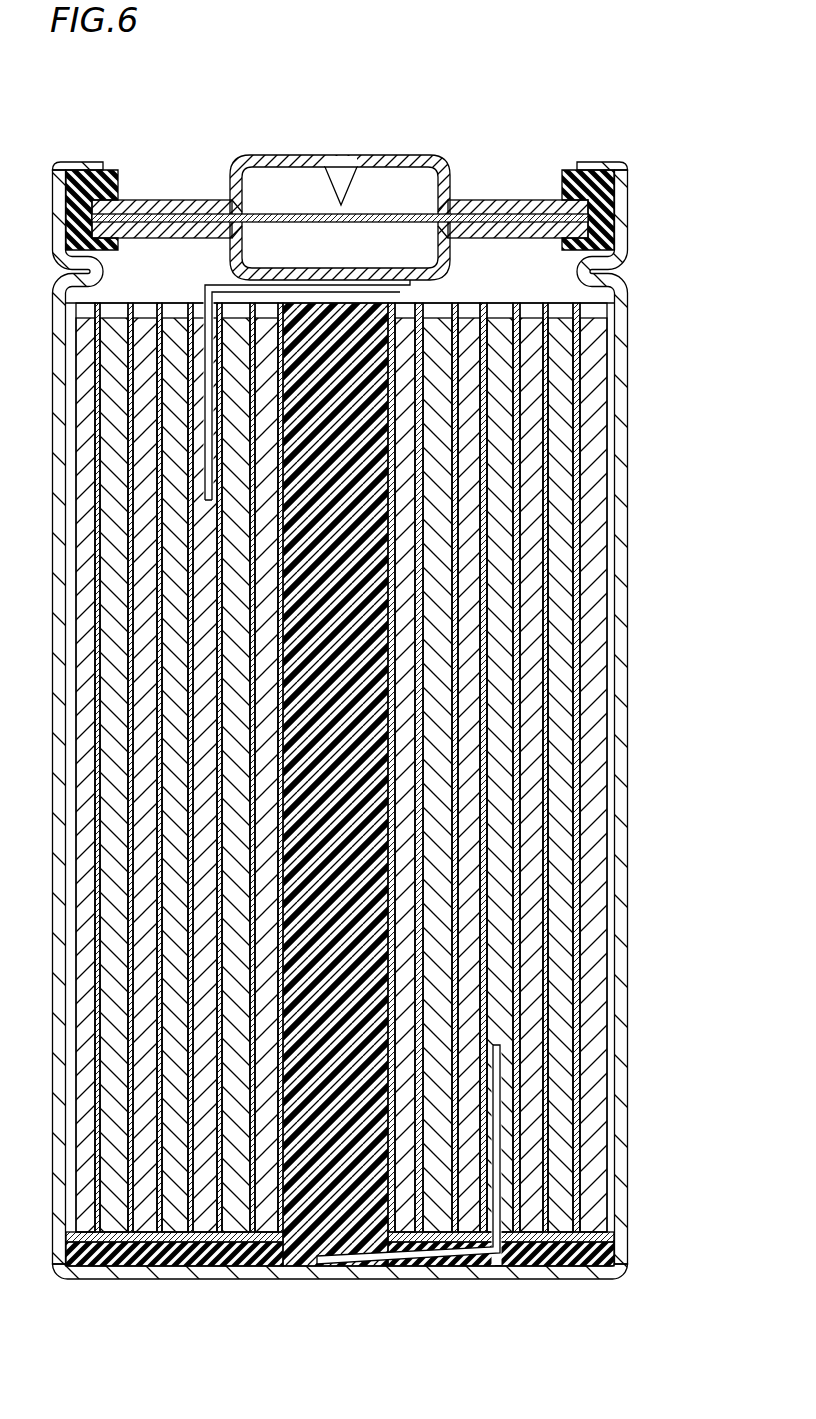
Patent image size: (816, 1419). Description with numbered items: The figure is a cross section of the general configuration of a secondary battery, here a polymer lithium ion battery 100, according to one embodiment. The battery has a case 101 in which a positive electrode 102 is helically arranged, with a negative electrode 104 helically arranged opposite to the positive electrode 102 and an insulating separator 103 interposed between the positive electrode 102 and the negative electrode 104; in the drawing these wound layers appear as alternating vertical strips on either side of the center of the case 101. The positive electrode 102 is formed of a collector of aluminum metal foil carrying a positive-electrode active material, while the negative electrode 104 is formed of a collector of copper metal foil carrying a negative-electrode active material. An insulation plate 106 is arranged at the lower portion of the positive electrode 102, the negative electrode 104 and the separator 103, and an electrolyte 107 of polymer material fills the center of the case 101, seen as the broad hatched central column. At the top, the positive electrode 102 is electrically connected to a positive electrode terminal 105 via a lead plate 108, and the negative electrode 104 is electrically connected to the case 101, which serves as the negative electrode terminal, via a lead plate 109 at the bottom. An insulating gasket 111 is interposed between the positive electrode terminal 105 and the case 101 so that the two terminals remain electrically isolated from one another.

The polymer lithium ion battery 100 is at (376, 140).
The case 101 is at (628, 507).
The positive electrode 102 is at (537, 626).
The insulating separator 103 is at (578, 727).
The negative electrode 104 is at (497, 908).
The positive electrode terminal 105 is at (465, 200).
The insulation plate 106 is at (535, 1266).
The electrolyte 107 is at (305, 1262).
The lead plate 108 is at (225, 287).
The lead plate 109 is at (408, 1264).
The insulating gasket 111 is at (567, 170).